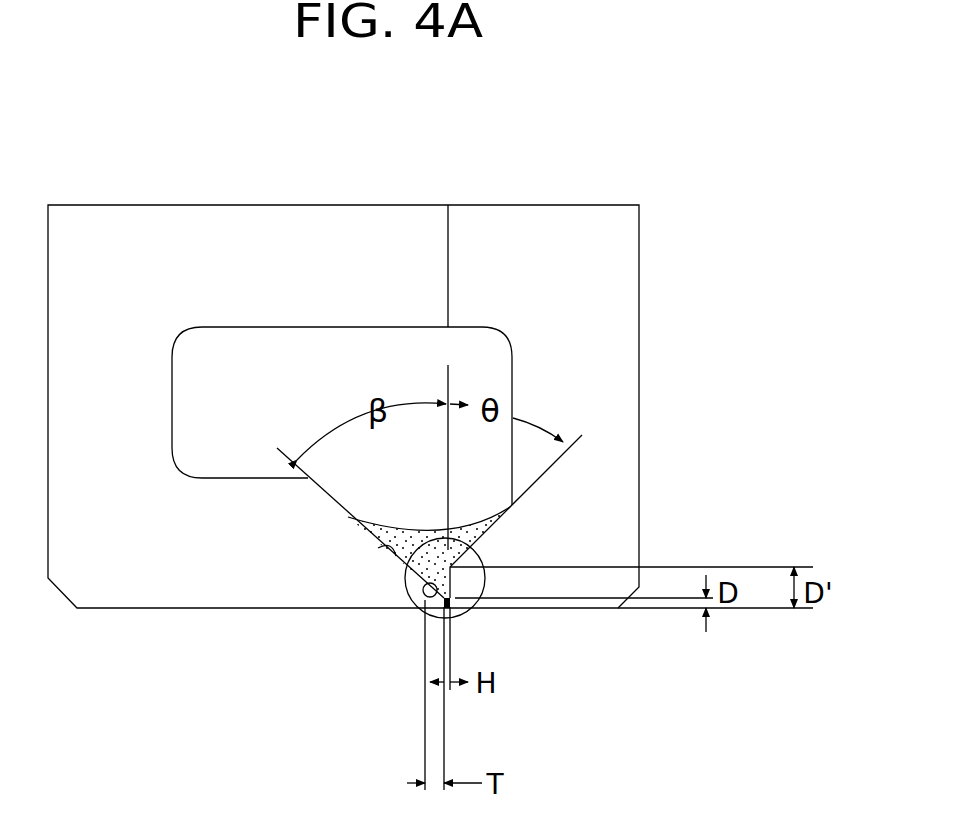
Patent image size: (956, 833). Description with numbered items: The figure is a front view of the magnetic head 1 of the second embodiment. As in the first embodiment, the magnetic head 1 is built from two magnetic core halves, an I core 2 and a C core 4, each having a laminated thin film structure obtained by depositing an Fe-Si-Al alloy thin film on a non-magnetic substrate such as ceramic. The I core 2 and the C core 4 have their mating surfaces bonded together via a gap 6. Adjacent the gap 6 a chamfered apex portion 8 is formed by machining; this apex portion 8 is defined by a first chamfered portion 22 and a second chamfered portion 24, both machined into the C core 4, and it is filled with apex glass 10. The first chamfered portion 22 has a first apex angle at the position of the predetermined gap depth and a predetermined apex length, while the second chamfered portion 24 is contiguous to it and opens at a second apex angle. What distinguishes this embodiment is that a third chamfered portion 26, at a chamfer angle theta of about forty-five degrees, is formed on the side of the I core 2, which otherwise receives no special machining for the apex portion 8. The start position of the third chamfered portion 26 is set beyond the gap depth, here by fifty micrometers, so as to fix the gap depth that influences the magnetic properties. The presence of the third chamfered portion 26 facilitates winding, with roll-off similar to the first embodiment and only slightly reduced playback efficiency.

The magnetic head 1 is at (442, 188).
The I core 2 is at (533, 219).
The C core 4 is at (141, 220).
The gap 6 is at (468, 618).
The apex portion 8 is at (432, 524).
The apex glass 10 is at (380, 545).
The first chamfered portion 22 is at (420, 592).
The second chamfered portion 24 is at (385, 552).
The third chamfered portion 26 is at (487, 532).